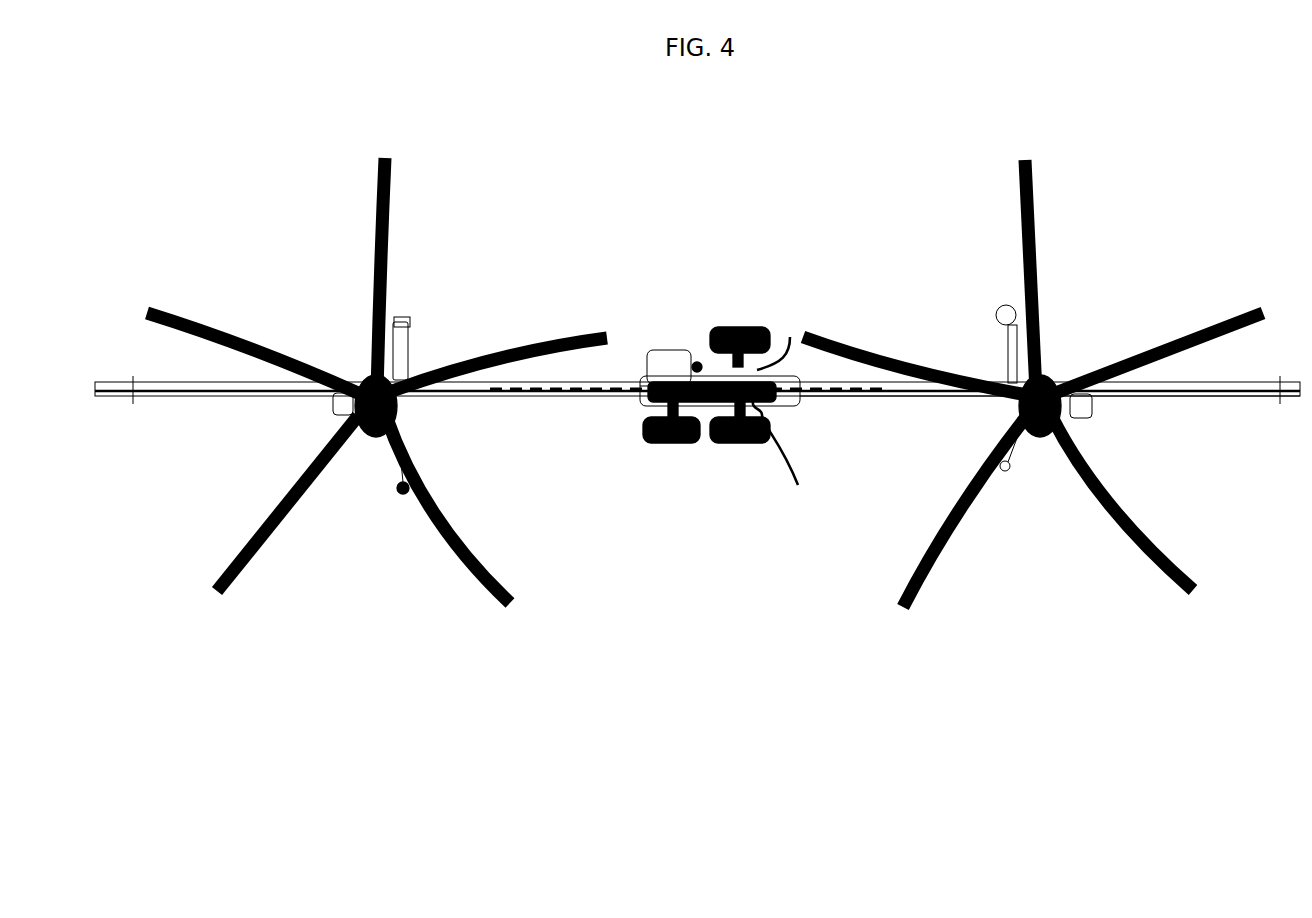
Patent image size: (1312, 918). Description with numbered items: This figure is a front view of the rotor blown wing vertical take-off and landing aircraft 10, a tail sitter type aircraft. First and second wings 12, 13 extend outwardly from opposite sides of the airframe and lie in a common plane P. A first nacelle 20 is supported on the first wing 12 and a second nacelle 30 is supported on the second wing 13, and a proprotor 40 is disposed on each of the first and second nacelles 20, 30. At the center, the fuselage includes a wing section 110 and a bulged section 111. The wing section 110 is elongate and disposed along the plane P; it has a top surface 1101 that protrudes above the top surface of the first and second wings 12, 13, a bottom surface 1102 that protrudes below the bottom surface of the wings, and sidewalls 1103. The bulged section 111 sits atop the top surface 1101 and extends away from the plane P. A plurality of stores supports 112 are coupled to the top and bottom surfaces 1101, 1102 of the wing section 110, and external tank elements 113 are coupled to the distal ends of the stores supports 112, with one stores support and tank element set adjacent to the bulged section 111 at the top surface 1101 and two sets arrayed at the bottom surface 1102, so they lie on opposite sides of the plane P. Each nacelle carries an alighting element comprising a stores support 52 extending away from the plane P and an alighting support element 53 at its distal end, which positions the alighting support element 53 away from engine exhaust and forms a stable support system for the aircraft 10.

The aircraft 10 is at (697, 348).
The first wing 12 is at (517, 396).
The second wing 13 is at (833, 397).
The first nacelle 20 is at (338, 406).
The second nacelle 30 is at (1082, 416).
The proprotor 40 is at (366, 386).
The stores support 52 is at (410, 360).
The alighting support element 53 is at (408, 323).
The wing section 110 is at (717, 388).
The bulged section 111 is at (668, 358).
The stores supports 112 is at (740, 410).
The external tank elements 113 is at (740, 335).
The top surface 1101 is at (799, 337).
The bottom surface 1102 is at (797, 458).
The sidewalls 1103 is at (653, 394).
The plane P is at (868, 393).